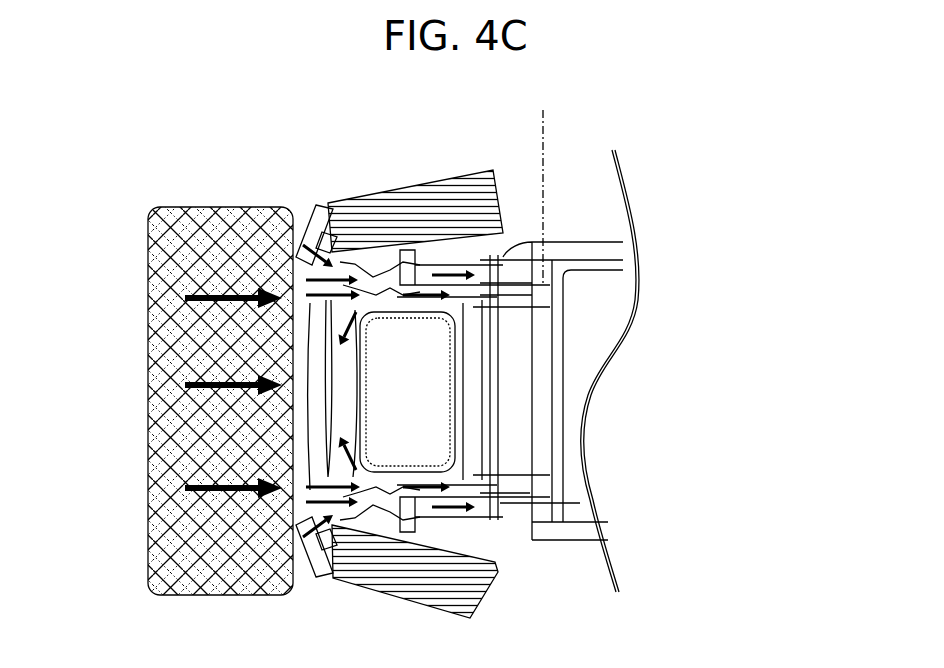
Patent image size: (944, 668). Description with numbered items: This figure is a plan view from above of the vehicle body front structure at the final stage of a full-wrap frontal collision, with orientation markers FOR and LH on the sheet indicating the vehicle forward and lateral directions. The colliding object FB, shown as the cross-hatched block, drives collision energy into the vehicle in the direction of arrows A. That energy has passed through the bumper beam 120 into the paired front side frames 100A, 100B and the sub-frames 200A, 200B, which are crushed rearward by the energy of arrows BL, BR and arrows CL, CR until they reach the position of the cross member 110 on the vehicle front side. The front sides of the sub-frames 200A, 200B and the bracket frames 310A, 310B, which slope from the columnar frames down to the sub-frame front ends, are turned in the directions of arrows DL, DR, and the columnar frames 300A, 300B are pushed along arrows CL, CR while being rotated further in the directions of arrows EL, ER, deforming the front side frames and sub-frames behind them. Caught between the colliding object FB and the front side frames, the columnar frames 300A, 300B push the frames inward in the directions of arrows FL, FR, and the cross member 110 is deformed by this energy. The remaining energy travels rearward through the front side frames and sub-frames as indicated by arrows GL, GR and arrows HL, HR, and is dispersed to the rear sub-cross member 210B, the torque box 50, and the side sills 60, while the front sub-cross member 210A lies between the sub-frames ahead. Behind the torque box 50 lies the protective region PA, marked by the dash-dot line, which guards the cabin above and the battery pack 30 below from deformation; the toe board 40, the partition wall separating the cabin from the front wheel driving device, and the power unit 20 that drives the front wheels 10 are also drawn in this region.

The front wheels 10 is at (500, 210).
The power unit 20 is at (425, 381).
The battery pack 30 is at (567, 453).
The toe board 40 is at (530, 246).
The torque box 50 is at (538, 343).
The side sills 60 is at (587, 257).
The front side frame 100A is at (533, 297).
The front side frame 100B is at (480, 483).
The cross member 110 is at (313, 427).
The bumper beam 120 is at (300, 467).
The sub-frame 200A is at (600, 268).
The sub-frame 200B is at (567, 508).
The sub-cross member 210A is at (307, 348).
The sub-cross member 210B is at (483, 413).
The columnar frame 300A is at (364, 212).
The columnar frame 300B is at (200, 588).
The bracket frame 310A is at (318, 245).
The bracket frame 310B is at (313, 537).
The colliding object FB is at (160, 212).
The arrows A is at (212, 296).
The protective region PA is at (555, 128).
The arrow CL is at (303, 245).
The arrow DL is at (353, 238).
The arrow EL is at (355, 255).
The arrow HL is at (494, 240).
The arrow GL is at (417, 300).
The arrow FL is at (357, 333).
The arrow BL is at (313, 301).
The arrow BR is at (313, 492).
The arrow CR is at (310, 500).
The arrow DR is at (333, 500).
The arrow ER is at (372, 507).
The arrow FR is at (357, 446).
The arrow GR is at (418, 482).
The arrow HR is at (442, 507).
The left-hand direction LH is at (886, 595).
The forward direction FOR is at (886, 595).